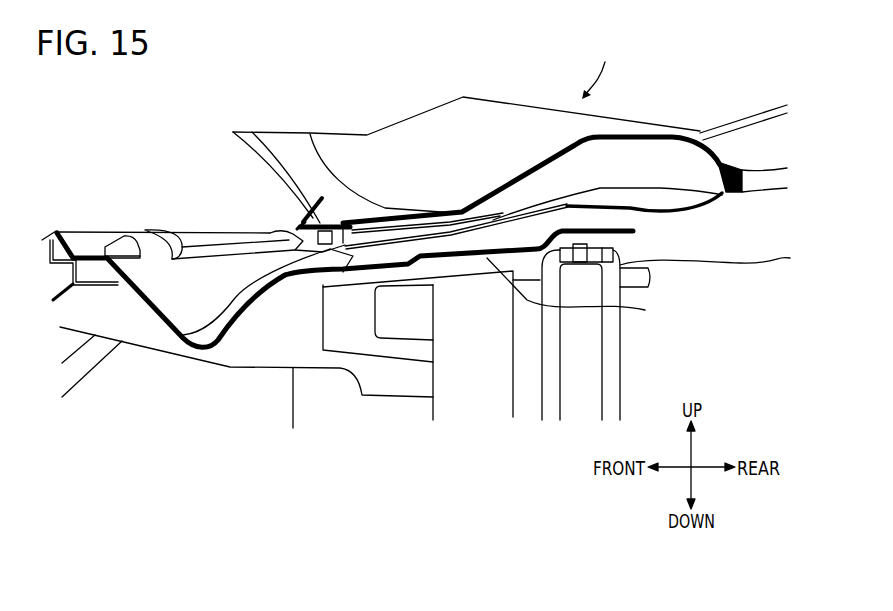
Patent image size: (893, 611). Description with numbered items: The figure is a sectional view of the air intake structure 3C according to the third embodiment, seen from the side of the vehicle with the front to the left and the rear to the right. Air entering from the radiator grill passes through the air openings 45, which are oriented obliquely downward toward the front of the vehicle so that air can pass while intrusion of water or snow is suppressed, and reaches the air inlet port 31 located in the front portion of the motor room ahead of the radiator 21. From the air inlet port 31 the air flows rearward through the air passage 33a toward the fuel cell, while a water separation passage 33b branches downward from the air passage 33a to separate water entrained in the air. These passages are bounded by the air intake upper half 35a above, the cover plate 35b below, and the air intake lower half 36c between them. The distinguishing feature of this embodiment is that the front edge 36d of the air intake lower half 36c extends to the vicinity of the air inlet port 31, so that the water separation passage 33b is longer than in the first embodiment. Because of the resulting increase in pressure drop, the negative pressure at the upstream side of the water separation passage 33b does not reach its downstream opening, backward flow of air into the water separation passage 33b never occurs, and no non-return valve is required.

The air intake structure 3C is at (641, 76).
The radiator 21 is at (621, 373).
The air inlet port 31 is at (267, 229).
The air passage 33a is at (625, 162).
The water separation passage 33b is at (532, 230).
The air intake upper half 35a is at (728, 163).
The cover plate 35b is at (586, 290).
The air intake lower half 36c is at (719, 202).
The front edge 36d is at (352, 262).
The air openings 45 is at (138, 287).